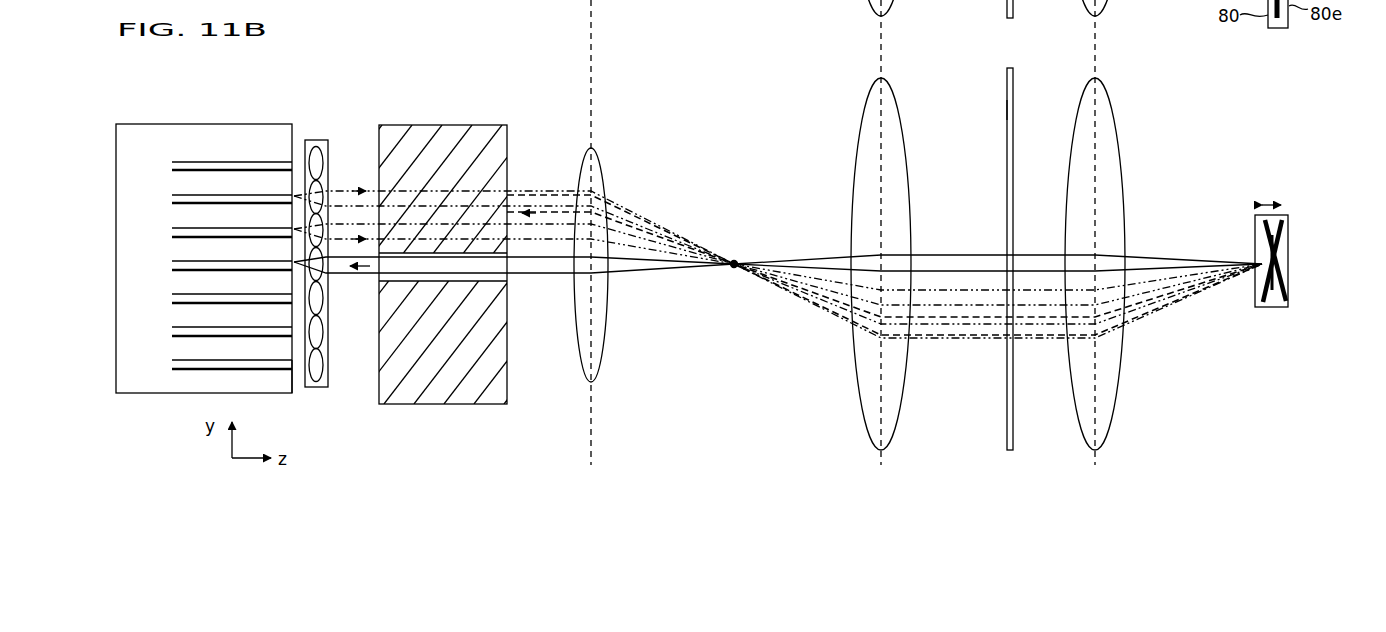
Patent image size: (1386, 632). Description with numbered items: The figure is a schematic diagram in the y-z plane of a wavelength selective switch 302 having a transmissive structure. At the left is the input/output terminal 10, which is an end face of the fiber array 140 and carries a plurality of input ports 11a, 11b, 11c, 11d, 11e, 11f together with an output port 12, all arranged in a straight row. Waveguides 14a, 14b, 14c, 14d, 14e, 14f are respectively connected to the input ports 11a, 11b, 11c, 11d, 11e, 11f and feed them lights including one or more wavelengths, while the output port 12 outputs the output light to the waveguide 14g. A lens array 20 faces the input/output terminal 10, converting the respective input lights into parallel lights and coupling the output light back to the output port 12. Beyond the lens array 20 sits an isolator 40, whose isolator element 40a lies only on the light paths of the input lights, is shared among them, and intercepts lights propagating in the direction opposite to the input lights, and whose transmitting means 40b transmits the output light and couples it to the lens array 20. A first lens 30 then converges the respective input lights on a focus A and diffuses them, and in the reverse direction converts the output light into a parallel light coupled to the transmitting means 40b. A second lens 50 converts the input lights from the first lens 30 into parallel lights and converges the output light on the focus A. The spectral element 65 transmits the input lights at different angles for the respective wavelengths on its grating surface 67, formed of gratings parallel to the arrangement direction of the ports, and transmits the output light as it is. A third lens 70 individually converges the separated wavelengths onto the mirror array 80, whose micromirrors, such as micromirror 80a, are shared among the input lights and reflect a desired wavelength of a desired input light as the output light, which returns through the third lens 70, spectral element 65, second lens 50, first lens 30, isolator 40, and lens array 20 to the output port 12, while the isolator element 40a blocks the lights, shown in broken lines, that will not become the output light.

The fiber array 140 is at (204, 124).
The input/output terminal 10 is at (293, 386).
The input port 11a is at (288, 162).
The input port 11b is at (288, 195).
The input port 11c is at (288, 228).
The input port 11d is at (288, 294).
The input port 11e is at (288, 327).
The input port 11f is at (288, 360).
The output port 12 is at (288, 261).
The waveguide 14a is at (182, 162).
The waveguide 14b is at (182, 195).
The waveguide 14c is at (182, 228).
The waveguide 14d is at (182, 294).
The waveguide 14e is at (182, 327).
The waveguide 14f is at (182, 360).
The waveguide 14g is at (182, 261).
The lens array 20 is at (320, 140).
The first lens 30 is at (598, 152).
The isolator 40 is at (396, 243).
The isolator element 40a is at (501, 157).
The transmitting means 40b is at (503, 278).
The focus A is at (735, 261).
The second lens 50 is at (888, 82).
The spectral element 65 is at (1007, 69).
The grating surface 67 is at (1003, 108).
The third lens 70 is at (1103, 80).
The mirror array 80 is at (1235, 263).
The micromirror 80a is at (1262, 227).
The wavelength selective switch 302 is at (1224, 86).